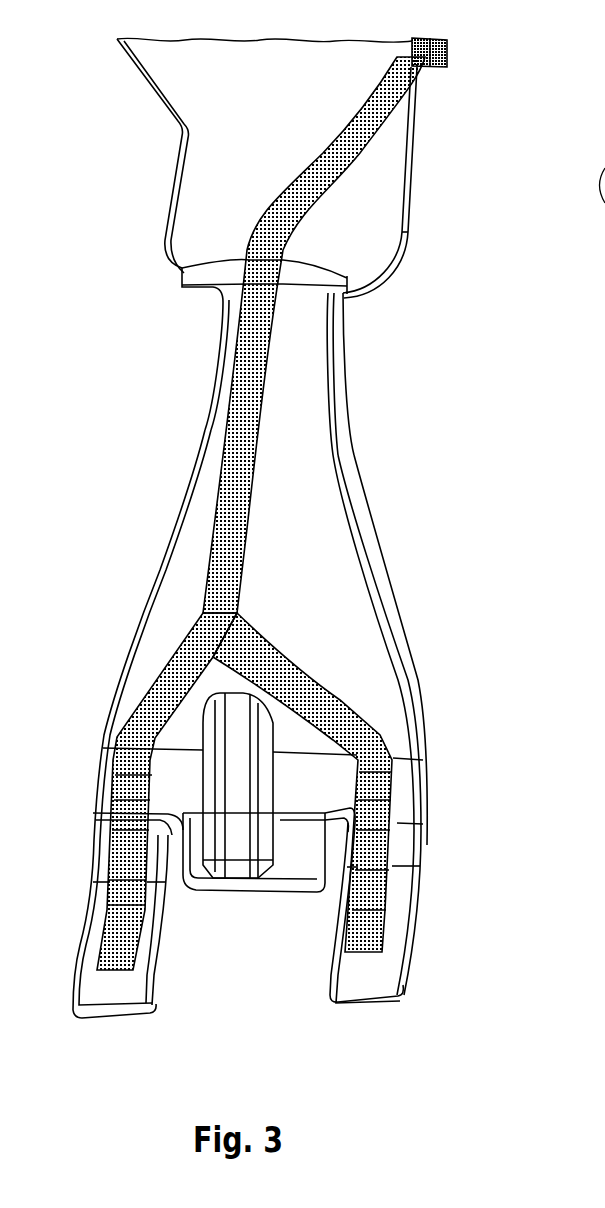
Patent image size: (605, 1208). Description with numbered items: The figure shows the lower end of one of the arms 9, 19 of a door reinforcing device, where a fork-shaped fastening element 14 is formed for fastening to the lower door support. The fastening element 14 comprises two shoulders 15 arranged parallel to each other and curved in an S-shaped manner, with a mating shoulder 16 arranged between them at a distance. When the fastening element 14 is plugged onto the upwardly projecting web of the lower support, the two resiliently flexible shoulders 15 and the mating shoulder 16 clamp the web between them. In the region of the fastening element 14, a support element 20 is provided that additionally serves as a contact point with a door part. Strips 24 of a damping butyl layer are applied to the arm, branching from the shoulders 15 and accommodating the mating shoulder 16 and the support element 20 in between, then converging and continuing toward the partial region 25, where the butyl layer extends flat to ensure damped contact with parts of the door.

The arm 9 is at (408, 215).
The arm 19 is at (360, 505).
The fork-shaped fastening element 14 is at (259, 877).
The shoulder 15 is at (96, 950).
The mating shoulder 16 is at (288, 858).
The support element 20 is at (237, 738).
The strip of butyl layer 24 is at (245, 365).
The partial region 25 is at (447, 47).